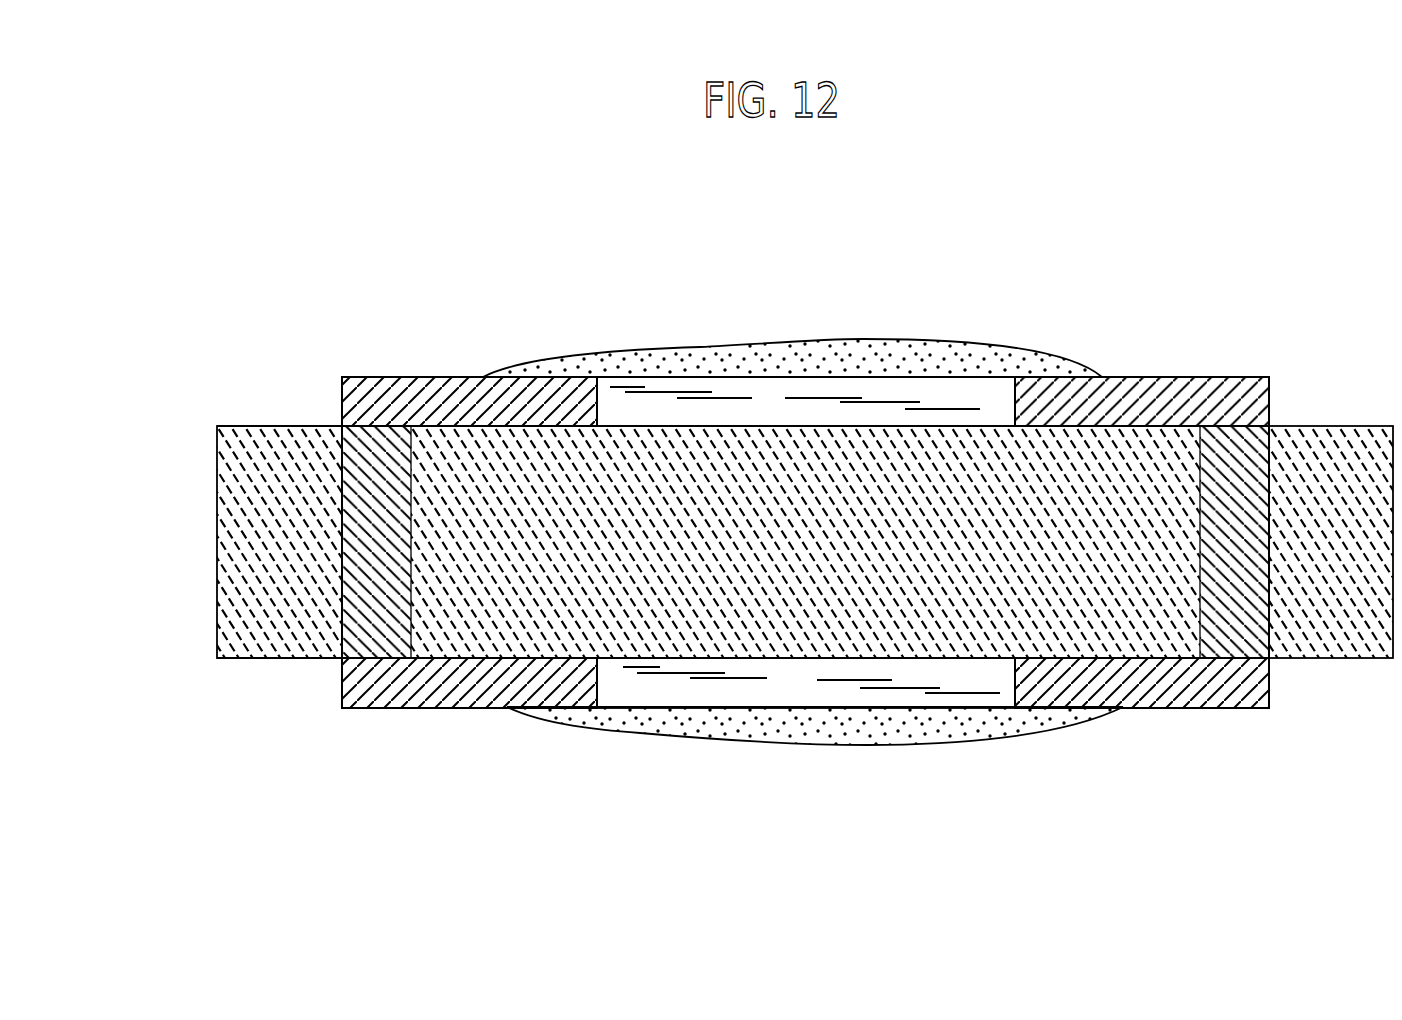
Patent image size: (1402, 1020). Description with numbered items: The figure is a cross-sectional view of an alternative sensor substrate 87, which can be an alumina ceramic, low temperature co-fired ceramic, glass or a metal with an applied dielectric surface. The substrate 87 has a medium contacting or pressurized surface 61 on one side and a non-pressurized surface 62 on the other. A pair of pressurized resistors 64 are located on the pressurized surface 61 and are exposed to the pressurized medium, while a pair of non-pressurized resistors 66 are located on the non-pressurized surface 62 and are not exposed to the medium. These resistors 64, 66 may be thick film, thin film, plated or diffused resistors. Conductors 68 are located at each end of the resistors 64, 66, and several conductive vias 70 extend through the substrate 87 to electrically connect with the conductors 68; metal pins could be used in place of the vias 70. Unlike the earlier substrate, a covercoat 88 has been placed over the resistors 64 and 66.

The pressurized surface 61 is at (290, 658).
The non-pressurized surface 62 is at (283, 426).
The pressurized resistors 64 is at (880, 707).
The non-pressurized resistors 66 is at (823, 377).
The conductors 68 is at (450, 377).
The conductive vias 70 is at (410, 548).
The alternative sensor substrate 87 is at (217, 532).
The covercoat 88 is at (952, 366).